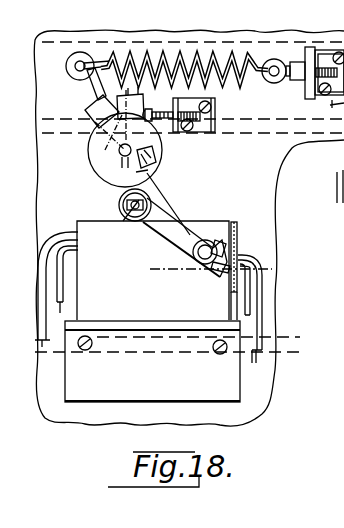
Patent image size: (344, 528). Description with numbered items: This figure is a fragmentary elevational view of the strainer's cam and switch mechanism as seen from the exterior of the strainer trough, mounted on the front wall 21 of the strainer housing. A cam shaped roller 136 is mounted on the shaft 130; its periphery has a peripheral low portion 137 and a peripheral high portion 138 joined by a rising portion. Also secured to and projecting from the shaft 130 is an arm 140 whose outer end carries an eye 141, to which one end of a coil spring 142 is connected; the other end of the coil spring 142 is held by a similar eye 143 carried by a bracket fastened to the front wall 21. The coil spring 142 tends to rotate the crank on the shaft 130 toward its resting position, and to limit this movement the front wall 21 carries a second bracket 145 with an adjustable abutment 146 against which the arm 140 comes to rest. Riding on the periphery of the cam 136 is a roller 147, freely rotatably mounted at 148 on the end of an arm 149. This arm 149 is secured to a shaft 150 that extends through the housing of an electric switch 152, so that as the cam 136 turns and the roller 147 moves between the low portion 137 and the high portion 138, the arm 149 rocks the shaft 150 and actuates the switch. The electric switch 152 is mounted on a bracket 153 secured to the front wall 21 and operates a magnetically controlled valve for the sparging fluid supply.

The front wall 21 is at (284, 254).
The shaft 130 is at (152, 200).
The cam shaped roller 136 is at (90, 166).
The peripheral low portion 137 is at (156, 170).
The peripheral high portion 138 is at (105, 186).
The arm 140 is at (88, 111).
The eye 141 is at (67, 64).
The coil spring 142 is at (216, 54).
The eye 143 is at (269, 83).
The second bracket 145 is at (209, 130).
The adjustable abutment 146 is at (213, 133).
The roller 147 is at (133, 226).
The roller mounting 148 is at (119, 208).
The arm 149 is at (197, 222).
The shaft 150 is at (205, 264).
The electric switch 152 is at (230, 230).
The bracket 153 is at (232, 382).